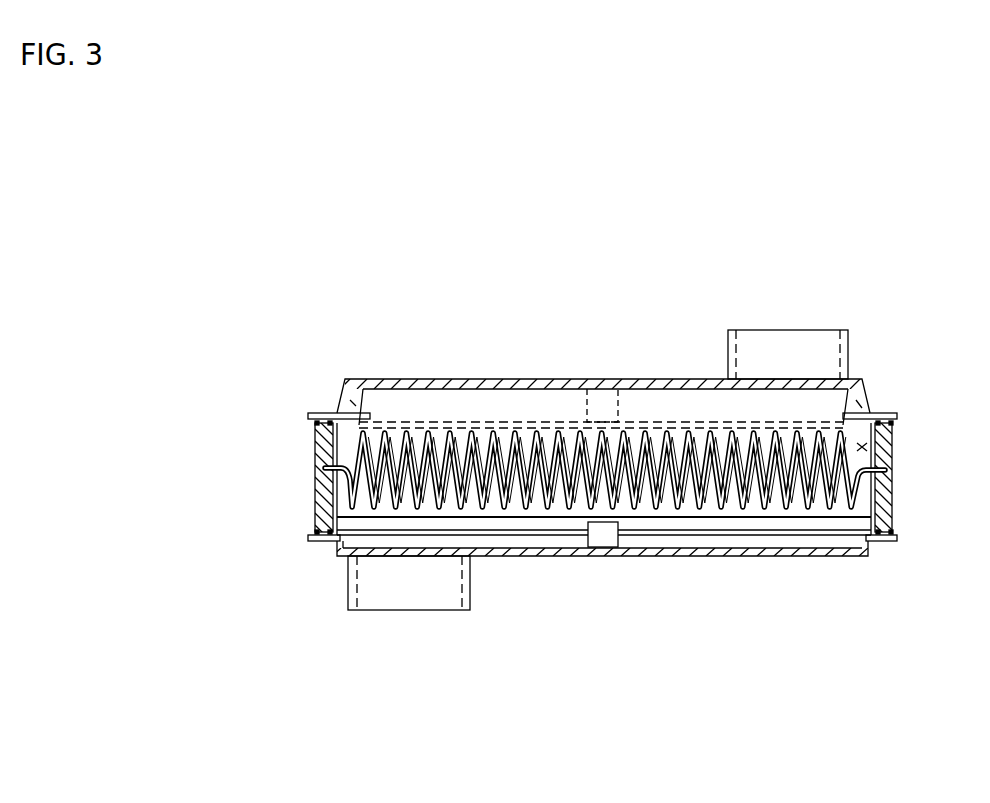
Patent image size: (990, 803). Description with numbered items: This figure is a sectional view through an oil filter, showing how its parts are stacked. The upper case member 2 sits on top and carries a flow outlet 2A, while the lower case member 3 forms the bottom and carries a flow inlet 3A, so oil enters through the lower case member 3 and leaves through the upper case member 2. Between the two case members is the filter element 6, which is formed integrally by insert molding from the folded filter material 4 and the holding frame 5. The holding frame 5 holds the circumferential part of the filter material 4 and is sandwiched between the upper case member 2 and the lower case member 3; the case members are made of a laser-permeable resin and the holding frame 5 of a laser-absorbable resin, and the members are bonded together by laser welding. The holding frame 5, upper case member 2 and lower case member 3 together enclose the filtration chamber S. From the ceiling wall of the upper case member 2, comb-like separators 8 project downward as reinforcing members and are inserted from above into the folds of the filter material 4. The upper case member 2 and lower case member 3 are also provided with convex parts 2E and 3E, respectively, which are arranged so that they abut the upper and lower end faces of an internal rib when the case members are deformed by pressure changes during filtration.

The upper case member 2 is at (468, 272).
The flow outlet 2A is at (812, 308).
The convex part 2E is at (622, 395).
The separator 8 is at (427, 403).
The lower case member 3 is at (680, 680).
The flow inlet 3A is at (389, 642).
The convex part 3E is at (618, 546).
The filter material 4 is at (335, 457).
The holding frame 5 is at (315, 482).
The filter element 6 is at (265, 460).
The filtration chamber S is at (867, 447).